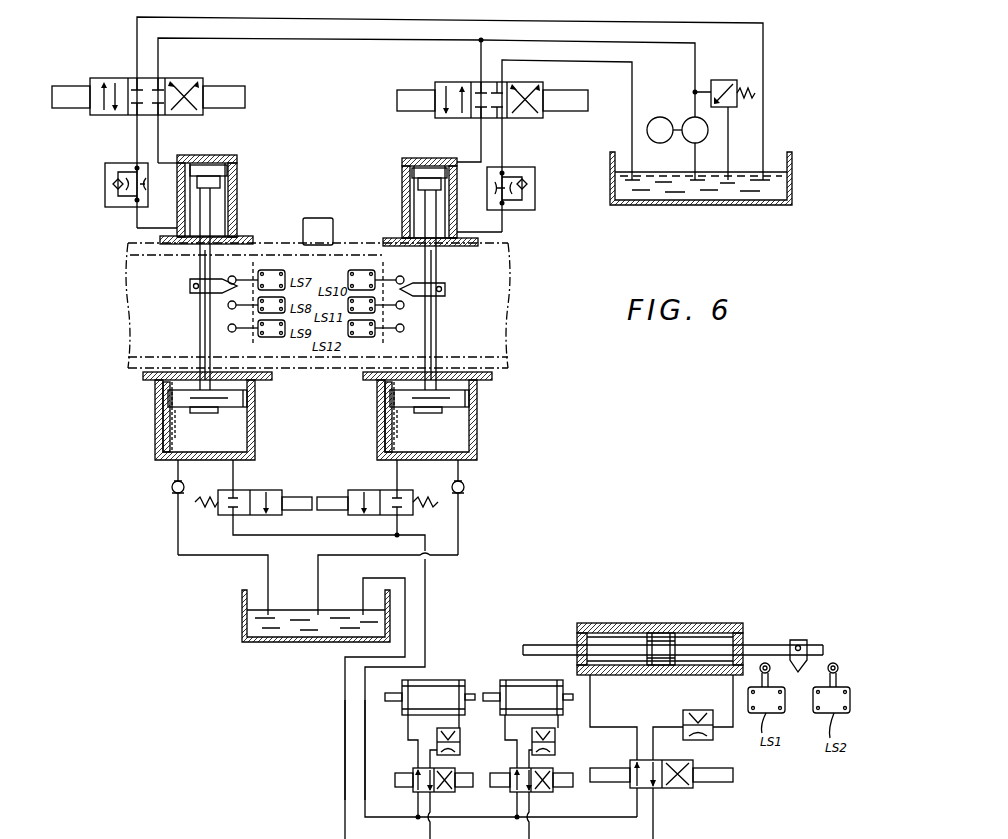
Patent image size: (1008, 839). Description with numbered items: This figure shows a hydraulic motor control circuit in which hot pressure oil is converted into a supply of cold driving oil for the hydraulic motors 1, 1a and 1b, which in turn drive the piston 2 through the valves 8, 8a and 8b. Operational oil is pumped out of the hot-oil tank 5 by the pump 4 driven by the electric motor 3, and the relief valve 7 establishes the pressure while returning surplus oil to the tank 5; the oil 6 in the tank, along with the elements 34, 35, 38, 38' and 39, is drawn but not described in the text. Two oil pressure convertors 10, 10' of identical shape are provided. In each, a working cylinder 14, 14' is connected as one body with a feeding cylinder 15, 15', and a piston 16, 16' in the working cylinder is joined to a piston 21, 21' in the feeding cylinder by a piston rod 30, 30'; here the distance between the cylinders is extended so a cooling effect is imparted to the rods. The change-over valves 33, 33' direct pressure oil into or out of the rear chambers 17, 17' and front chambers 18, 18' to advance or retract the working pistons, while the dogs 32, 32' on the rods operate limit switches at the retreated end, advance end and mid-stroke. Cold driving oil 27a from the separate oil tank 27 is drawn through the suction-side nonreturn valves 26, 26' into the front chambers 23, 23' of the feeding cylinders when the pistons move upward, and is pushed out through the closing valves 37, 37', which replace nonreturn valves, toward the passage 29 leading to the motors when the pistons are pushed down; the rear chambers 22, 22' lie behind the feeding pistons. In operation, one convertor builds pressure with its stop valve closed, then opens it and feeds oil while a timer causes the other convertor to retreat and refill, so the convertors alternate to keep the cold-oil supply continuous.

The hydraulic motor 1 is at (697, 623).
The hydraulic motor 1a is at (515, 680).
The hydraulic motor 1b is at (433, 690).
The piston 2 is at (663, 633).
The electric motor 3 is at (660, 117).
The pump 4 is at (688, 140).
The oil tank 5 is at (675, 205).
The hydraulic fluid 6 is at (728, 195).
The relief valve 7 is at (725, 80).
The change-over valve 8 is at (690, 788).
The valve 8a is at (545, 792).
The valve 8b is at (440, 792).
The oil pressure convertor 10 is at (220, 176).
The oil pressure convertor 10' is at (409, 188).
The working cylinder 14 is at (235, 200).
The working cylinder 14' is at (403, 202).
The feeding cylinder 15 is at (143, 417).
The feeding cylinder 15' is at (367, 417).
The piston 16 is at (239, 176).
The piston 16' is at (401, 189).
The rear chamber 17 is at (235, 158).
The rear chamber 17' is at (404, 171).
The front chamber 18 is at (220, 227).
The front chamber 18' is at (411, 233).
The piston 21 is at (180, 400).
The piston 21' is at (402, 400).
The rear chamber 22 is at (219, 386).
The rear chamber 22' is at (443, 386).
The front chamber 23 is at (225, 420).
The front chamber 23' is at (450, 420).
The nonreturn valve 26 is at (149, 507).
The nonreturn valve 26' is at (486, 507).
The oil tank 27 is at (242, 620).
The driving oil 27a is at (275, 635).
The passage 29 is at (365, 736).
The piston rod 30 is at (182, 289).
The piston rod 30' is at (456, 290).
The dog 32 is at (191, 287).
The dog 32' is at (445, 291).
The change-over valve 33 is at (148, 101).
The change-over valve 33' is at (504, 103).
The flow control valve 34 is at (460, 748).
The pipe line 35 is at (345, 766).
The closing valve 37 is at (254, 499).
The closing valve 37' is at (377, 499).
The check valve with throttle 38 is at (104, 185).
The check valve with throttle 38' is at (527, 205).
The timer relay 39 is at (330, 218).